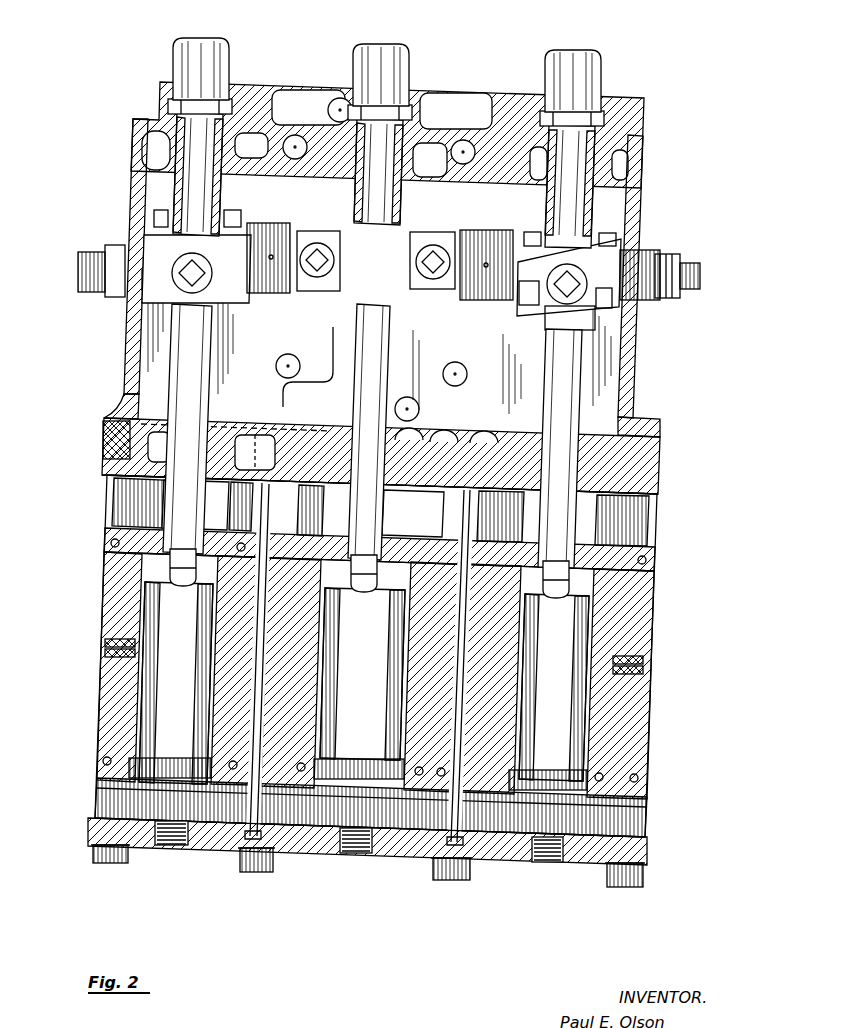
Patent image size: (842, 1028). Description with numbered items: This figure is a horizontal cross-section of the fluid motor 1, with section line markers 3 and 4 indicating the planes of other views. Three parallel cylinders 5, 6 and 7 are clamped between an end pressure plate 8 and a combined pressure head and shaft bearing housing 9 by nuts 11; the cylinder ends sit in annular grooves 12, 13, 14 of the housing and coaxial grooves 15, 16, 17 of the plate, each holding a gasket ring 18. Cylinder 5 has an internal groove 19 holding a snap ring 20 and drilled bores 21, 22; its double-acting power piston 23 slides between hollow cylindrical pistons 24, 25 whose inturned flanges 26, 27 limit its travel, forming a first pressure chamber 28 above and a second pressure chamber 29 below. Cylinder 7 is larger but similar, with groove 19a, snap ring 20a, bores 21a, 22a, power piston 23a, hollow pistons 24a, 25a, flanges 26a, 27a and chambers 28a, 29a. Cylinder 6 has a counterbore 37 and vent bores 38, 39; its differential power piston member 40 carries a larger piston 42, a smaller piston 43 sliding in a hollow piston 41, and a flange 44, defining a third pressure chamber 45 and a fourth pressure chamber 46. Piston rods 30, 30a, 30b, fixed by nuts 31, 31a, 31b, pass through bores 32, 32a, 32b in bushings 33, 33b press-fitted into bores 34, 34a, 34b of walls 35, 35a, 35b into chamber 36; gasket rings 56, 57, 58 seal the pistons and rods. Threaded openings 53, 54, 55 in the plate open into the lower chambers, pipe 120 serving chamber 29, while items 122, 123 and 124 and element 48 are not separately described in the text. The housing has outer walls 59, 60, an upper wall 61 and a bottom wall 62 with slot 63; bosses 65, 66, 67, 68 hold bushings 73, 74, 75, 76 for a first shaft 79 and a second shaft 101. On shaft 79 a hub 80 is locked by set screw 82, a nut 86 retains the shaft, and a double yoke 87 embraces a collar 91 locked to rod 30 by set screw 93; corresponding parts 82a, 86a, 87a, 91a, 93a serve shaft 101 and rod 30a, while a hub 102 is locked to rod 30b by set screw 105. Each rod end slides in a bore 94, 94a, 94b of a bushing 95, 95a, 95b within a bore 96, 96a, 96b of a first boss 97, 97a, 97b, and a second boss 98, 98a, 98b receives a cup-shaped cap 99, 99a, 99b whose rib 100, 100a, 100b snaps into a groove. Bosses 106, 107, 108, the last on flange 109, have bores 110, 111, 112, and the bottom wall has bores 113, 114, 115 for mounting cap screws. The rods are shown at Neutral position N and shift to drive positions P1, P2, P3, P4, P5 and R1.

The fluid motor 1 is at (637, 373).
The section line 3 is at (95, 470).
The section line 4 is at (85, 249).
The cylinder 5 is at (103, 728).
The cylinder 6 is at (447, 637).
The cylinder 7 is at (200, 46).
The end pressure plate 8 is at (582, 862).
The combined pressure head and shaft bearing housing 9 is at (132, 338).
The nuts 11 is at (640, 877).
The annular groove 12 is at (122, 495).
The annular groove 13 is at (255, 420).
The annular groove 14 is at (643, 523).
The annular groove 15 is at (98, 815).
The annular groove 16 is at (260, 830).
The annular groove 17 is at (638, 843).
The resilient gasket ring 18 is at (647, 845).
The annular groove 19 is at (220, 643).
The annular groove 19a is at (493, 657).
The snap ring 20 is at (110, 668).
The snap ring 20a is at (643, 687).
The drilled bore 21 is at (103, 637).
The drilled bore 21a is at (643, 660).
The drilled bore 22 is at (105, 648).
The drilled bore 22a is at (627, 665).
The double-acting cylindrical power piston 23 is at (130, 690).
The double-acting cylindrical power piston 23a is at (600, 708).
The hollow cylindrical piston 24 is at (110, 607).
The hollow cylindrical piston 24a is at (633, 627).
The hollow cylindrical piston 25 is at (110, 710).
The hollow cylindrical piston 25a is at (628, 730).
The inturned annular flange 26 is at (125, 532).
The inturned annular flange 26a is at (652, 553).
The inturned annular flange 27 is at (122, 775).
The inturned annular flange 27a is at (600, 782).
The first pressure chamber 28 is at (117, 520).
The first pressure chamber 28a is at (650, 545).
The second pressure chamber 29 is at (105, 785).
The second pressure chamber 29a is at (628, 803).
The piston rod 30 is at (177, 380).
The piston rod 30a is at (578, 390).
The piston rod 30b is at (388, 347).
The nut 31 is at (170, 563).
The nut 31a is at (590, 593).
The nut 31b is at (345, 600).
The bore 32 is at (210, 420).
The bore 32a is at (633, 467).
The bore 32b is at (305, 405).
The bushing 33 is at (170, 420).
The bushing 33b is at (305, 425).
The bore 34 is at (125, 440).
The bore 34a is at (657, 450).
The bore 34b is at (282, 509).
The wall 35 is at (132, 423).
The wall 35a is at (660, 433).
The wall 35b is at (413, 420).
The chamber 36 is at (142, 358).
The counterbore 37 is at (455, 842).
The drilled bore 38 is at (233, 660).
The drilled bore 39 is at (430, 672).
The double-acting differential type cylindrical power piston member 40 is at (408, 703).
The hollow cylindrical piston 41 is at (427, 723).
The larger piston 42 is at (415, 545).
The smaller piston 43 is at (410, 780).
The external annular flange 44 is at (460, 653).
The third pressure chamber 45 is at (427, 433).
The fourth pressure chamber 46 is at (392, 857).
The pocket 48 is at (310, 410).
The screw-threaded opening 53 is at (183, 847).
The screw-threaded opening 54 is at (347, 853).
The screw-threaded opening 55 is at (537, 863).
The resilient gasket ring 56 is at (613, 763).
The first resilient gasket ring 57 is at (660, 490).
The second resilient gasket ring 58 is at (572, 583).
The outer upstanding wall 59 is at (142, 318).
The outer upstanding wall 60 is at (617, 338).
The upper wall 61 is at (456, 111).
The bottom wall 62 is at (505, 188).
The slot 63 is at (345, 375).
The inward facing boss 65 is at (143, 288).
The inward facing boss 66 is at (618, 303).
The upstanding boss 67 is at (282, 207).
The upstanding boss 68 is at (473, 237).
The bushing 73 is at (127, 276).
The bushing 74 is at (247, 233).
The bushing 75 is at (513, 303).
The bushing 76 is at (637, 302).
The first shaft 79 is at (80, 252).
The hub portion 80 is at (298, 295).
The set screw 82 is at (322, 283).
The set screw 82a is at (435, 295).
The nut 86 is at (118, 248).
The nut 86a is at (655, 265).
The first double yoke 87 is at (160, 213).
The double yoke 87a is at (593, 220).
The collar 91 is at (160, 225).
The collar 91a is at (627, 238).
The set screw 93 is at (233, 298).
The set screw 93a is at (538, 315).
The bore 94 is at (180, 127).
The bore 94a is at (600, 138).
The bore 94b is at (367, 183).
The bushing 95 is at (140, 132).
The bushing 95a is at (613, 147).
The bushing 95b is at (372, 173).
The bore 96 is at (160, 150).
The bore 96a is at (615, 170).
The bore 96b is at (402, 193).
The first boss 97 is at (155, 165).
The first boss 97a is at (612, 177).
The first boss 97b is at (407, 183).
The second boss 98 is at (170, 103).
The second boss 98a is at (607, 117).
The second boss 98b is at (407, 108).
The cup-shaped cap member 99 is at (172, 58).
The cup-shaped cap member 99a is at (602, 67).
The cup-shaped cap member 99b is at (367, 57).
The exterior annular rib 100 is at (172, 88).
The exterior annular rib 100a is at (603, 100).
The exterior annular rib 100b is at (385, 81).
The second shaft 101 is at (680, 278).
The hub portion 102 is at (405, 300).
The set screw 105 is at (340, 300).
The boss 106 is at (290, 160).
The boss 107 is at (470, 177).
The third boss 108 is at (308, 107).
The flange 109 is at (460, 98).
The bore 110 is at (291, 160).
The bore 111 is at (461, 156).
The bore 112 is at (341, 100).
The bore 113 is at (280, 363).
The bore 114 is at (407, 396).
The bore 115 is at (464, 367).
The pipe 120 is at (170, 848).
The spring seat 122 is at (353, 867).
The packing 123 is at (135, 452).
The spring seat 124 is at (547, 862).
The Neutral position N is at (543, 117).
The First Forward Drive position P1 is at (583, 153).
The Second Forward Drive position P2 is at (377, 148).
The Third Forward Drive position P3 is at (380, 68).
The Fourth Forward Drive position P4 is at (195, 64).
The Fifth Forward Drive position P5 is at (193, 140).
The Reverse Drive position R1 is at (580, 73).